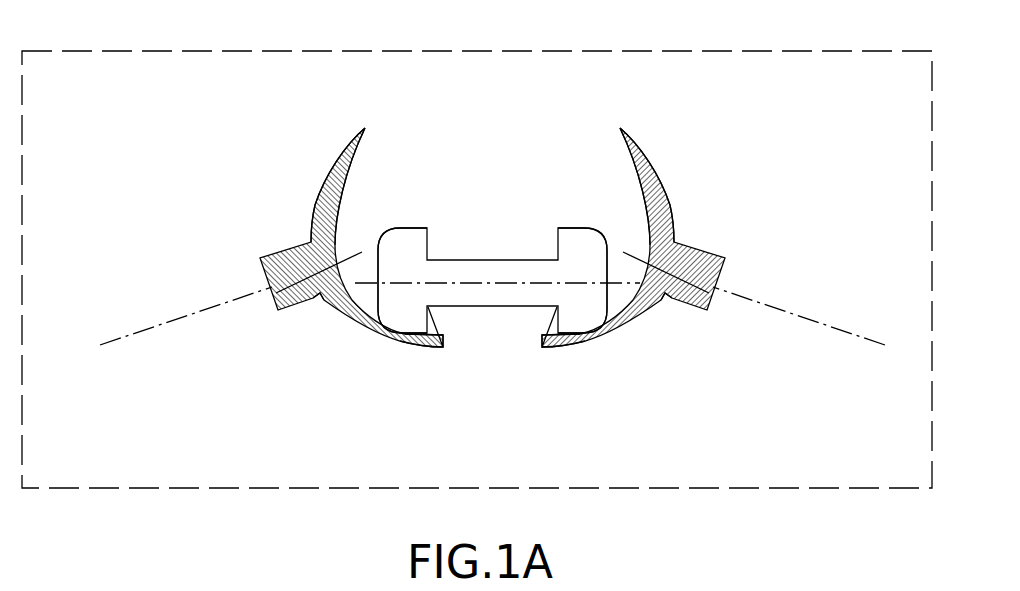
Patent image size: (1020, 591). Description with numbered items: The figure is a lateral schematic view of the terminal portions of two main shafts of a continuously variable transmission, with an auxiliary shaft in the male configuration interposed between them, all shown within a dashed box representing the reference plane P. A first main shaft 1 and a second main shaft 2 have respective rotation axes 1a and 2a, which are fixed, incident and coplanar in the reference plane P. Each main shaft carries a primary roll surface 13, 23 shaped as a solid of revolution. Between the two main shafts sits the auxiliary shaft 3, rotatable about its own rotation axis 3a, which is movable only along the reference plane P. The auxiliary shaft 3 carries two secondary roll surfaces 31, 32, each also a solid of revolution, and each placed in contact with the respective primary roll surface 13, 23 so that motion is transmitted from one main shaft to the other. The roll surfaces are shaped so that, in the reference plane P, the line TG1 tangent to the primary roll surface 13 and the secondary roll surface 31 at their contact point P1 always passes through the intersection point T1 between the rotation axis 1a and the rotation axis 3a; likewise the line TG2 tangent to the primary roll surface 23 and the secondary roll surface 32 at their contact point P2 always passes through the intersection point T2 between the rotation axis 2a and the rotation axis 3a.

The reference plane P is at (477, 244).
The first main shaft 1 is at (336, 237).
The rotation axis of first main shaft 1a is at (186, 288).
The primary roll surface of first main shaft 13 is at (380, 182).
The intersection point T1 is at (272, 309).
The tangent line TG1 is at (289, 333).
The contact point P1 is at (380, 357).
The second main shaft 2 is at (669, 237).
The rotation axis of second main shaft 2a is at (801, 298).
The primary roll surface of second main shaft 23 is at (603, 183).
The intersection point T2 is at (719, 308).
The tangent line TG2 is at (694, 334).
The contact point P2 is at (612, 362).
The auxiliary shaft 3 is at (492, 316).
The rotation axis of auxiliary shaft 3a is at (497, 350).
The secondary roll surface 31 is at (424, 249).
The secondary roll surface 32 is at (561, 251).